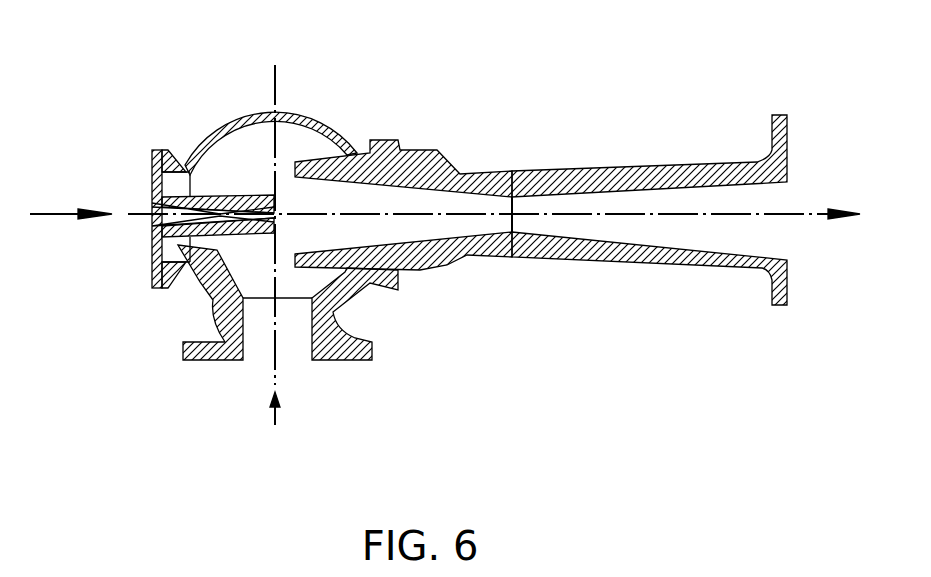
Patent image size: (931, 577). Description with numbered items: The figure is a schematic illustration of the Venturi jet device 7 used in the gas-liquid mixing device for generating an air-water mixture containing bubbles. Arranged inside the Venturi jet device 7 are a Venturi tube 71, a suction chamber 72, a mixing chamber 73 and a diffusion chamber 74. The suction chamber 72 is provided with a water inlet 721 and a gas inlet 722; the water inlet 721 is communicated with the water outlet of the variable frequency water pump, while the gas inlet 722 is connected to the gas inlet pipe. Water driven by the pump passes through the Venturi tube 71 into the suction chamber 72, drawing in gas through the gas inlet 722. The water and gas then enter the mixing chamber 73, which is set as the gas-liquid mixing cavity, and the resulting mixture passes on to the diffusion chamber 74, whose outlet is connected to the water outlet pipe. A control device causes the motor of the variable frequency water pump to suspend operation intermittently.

The Venturi jet device 7 is at (541, 182).
The Venturi tube 71 is at (164, 177).
The suction chamber 72 is at (237, 295).
The water inlet 721 is at (158, 215).
The gas inlet 722 is at (285, 340).
The mixing chamber 73 is at (405, 223).
The diffusion chamber 74 is at (633, 223).